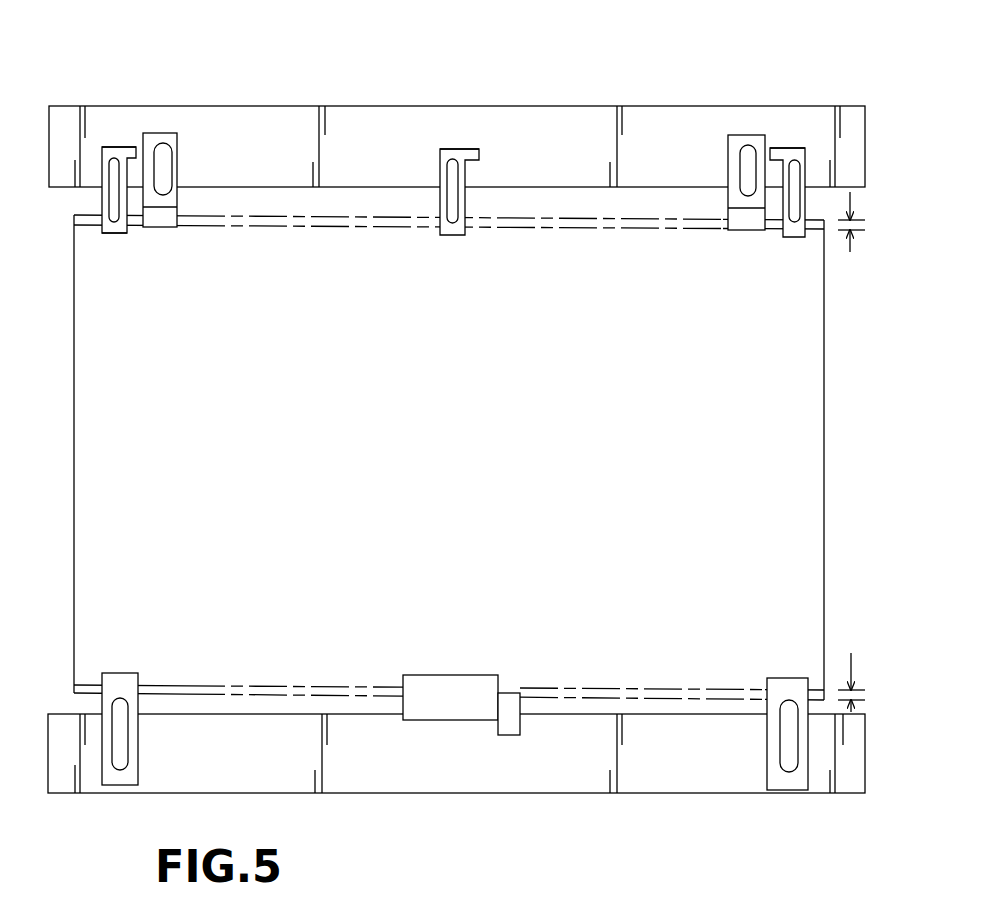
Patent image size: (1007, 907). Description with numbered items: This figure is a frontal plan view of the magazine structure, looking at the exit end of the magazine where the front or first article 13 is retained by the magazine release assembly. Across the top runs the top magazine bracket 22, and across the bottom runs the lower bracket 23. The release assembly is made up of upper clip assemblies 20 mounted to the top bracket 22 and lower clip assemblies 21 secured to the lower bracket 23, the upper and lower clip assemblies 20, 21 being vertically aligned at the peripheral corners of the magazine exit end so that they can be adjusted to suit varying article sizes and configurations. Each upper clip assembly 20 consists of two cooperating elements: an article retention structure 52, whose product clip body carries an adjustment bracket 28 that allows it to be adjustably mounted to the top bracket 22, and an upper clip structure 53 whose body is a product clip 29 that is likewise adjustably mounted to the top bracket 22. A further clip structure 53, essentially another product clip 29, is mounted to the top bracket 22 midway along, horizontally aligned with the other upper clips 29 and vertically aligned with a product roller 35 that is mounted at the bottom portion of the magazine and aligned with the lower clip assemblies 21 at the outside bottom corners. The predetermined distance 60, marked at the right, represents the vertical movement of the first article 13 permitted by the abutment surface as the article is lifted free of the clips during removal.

The front article 13 is at (478, 450).
The upper clip assembly 20 is at (117, 140).
The lower clip assembly 21 is at (135, 733).
The top magazine bracket 22 is at (578, 132).
The lower bracket 23 is at (66, 748).
The adjustment bracket 28 is at (178, 157).
The product clip 29 is at (101, 170).
The product roller 35 is at (463, 702).
The article retention structure 52 is at (167, 125).
The clip structure 53 is at (457, 140).
The predetermined distance 60 is at (870, 222).